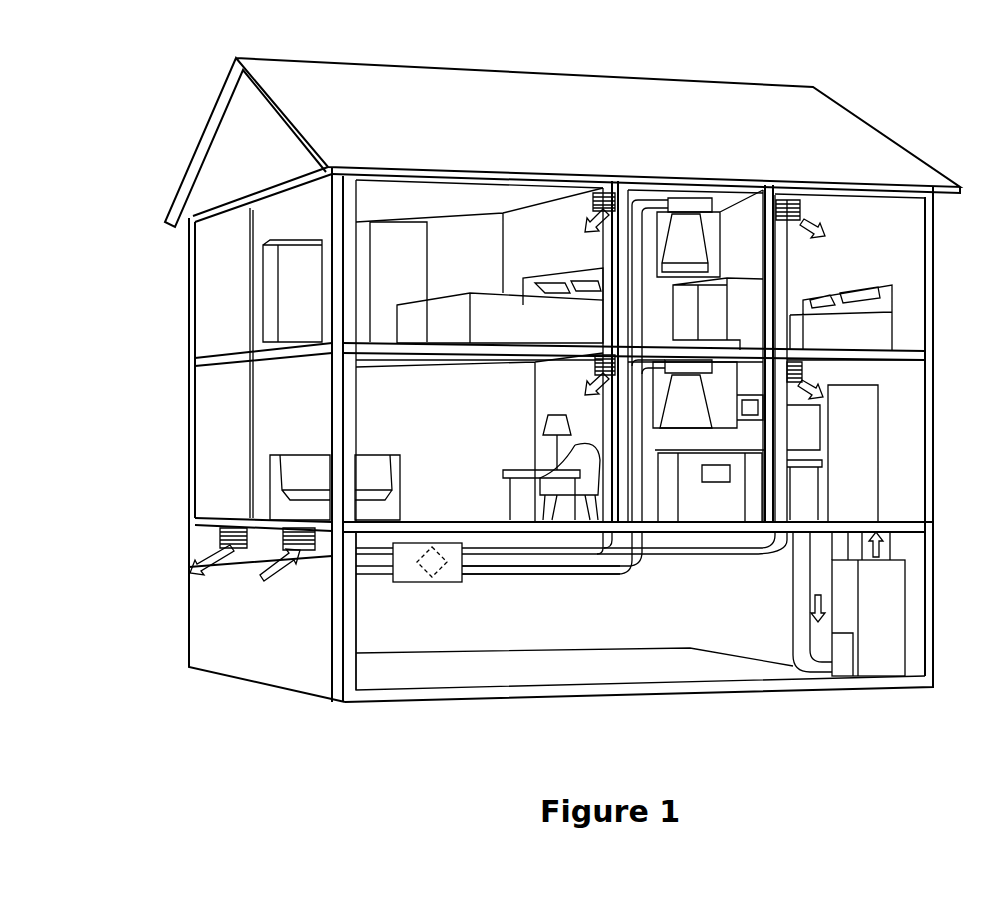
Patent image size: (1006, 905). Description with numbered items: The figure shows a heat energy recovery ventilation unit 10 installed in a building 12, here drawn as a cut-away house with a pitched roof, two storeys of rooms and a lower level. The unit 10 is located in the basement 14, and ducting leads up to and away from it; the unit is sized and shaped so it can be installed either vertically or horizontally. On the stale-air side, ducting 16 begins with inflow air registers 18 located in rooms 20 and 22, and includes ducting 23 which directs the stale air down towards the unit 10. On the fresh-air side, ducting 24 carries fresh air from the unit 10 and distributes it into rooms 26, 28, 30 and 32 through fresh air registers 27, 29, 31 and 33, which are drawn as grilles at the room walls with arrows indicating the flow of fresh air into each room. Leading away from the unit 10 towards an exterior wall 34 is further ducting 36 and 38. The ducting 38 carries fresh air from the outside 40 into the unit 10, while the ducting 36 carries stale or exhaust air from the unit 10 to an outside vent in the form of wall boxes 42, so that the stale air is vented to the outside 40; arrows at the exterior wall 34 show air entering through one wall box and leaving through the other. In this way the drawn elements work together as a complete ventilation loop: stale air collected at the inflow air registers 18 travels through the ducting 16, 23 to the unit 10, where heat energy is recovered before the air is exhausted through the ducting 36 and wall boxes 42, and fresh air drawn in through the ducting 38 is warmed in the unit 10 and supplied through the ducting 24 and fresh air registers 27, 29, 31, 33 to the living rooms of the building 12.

The heat energy recovery ventilation unit 10 is at (447, 583).
The building 12 is at (838, 112).
The basement 14 is at (607, 608).
The ducting 16 is at (650, 205).
The inflow air registers 18 is at (695, 200).
The room 20 is at (735, 210).
The room 22 is at (710, 530).
The ducting 23 is at (543, 556).
The ducting 24 is at (510, 568).
The room 26 is at (460, 225).
The fresh air register 27 is at (598, 205).
The room 28 is at (403, 422).
The fresh air register 29 is at (545, 375).
The room 30 is at (895, 250).
The fresh air register 31 is at (800, 210).
The room 32 is at (898, 440).
The fresh air register 33 is at (800, 370).
The exterior wall 34 is at (318, 560).
The ducting 36 is at (385, 580).
The ducting 38 is at (383, 557).
The outside 40 is at (141, 481).
The wall boxes 42 is at (205, 550).